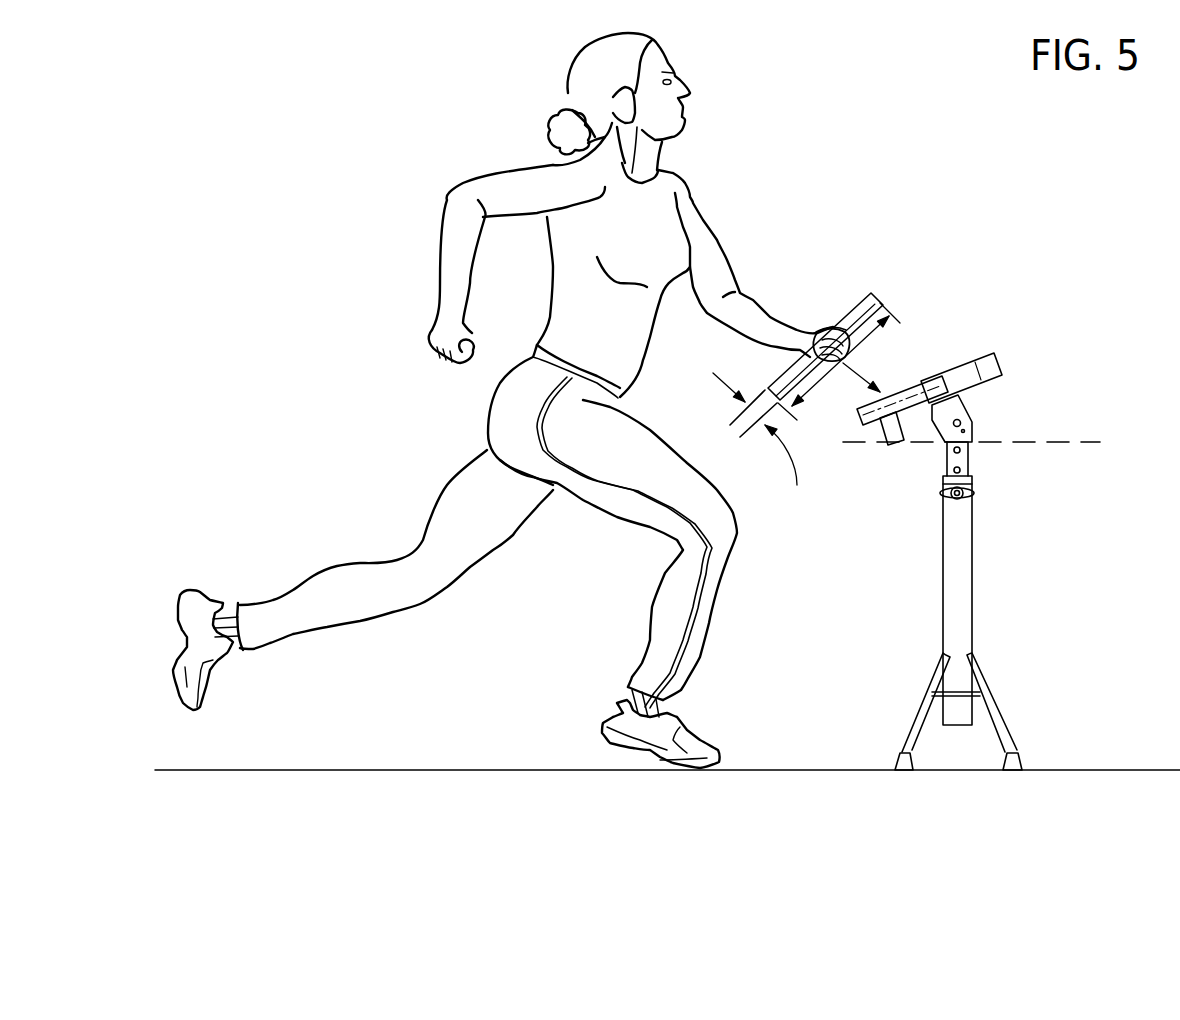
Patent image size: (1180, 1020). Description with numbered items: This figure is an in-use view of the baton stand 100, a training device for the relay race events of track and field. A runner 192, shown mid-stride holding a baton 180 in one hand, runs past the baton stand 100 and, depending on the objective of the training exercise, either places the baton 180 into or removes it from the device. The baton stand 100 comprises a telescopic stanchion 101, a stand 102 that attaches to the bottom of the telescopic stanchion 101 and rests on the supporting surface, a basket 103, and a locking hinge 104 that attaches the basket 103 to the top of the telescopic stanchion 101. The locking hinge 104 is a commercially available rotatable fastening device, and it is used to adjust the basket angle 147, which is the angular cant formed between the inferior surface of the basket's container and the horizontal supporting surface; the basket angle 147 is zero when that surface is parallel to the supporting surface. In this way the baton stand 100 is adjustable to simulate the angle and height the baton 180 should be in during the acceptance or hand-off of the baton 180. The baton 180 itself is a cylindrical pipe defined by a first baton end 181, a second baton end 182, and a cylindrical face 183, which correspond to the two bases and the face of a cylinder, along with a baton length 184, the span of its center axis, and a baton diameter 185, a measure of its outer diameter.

The baton stand 100 is at (1020, 421).
The telescopic stanchion 101 is at (972, 590).
The stand 102 is at (997, 707).
The basket 103 is at (1000, 357).
The locking hinge 104 is at (963, 393).
The basket angle 147 is at (917, 443).
The baton 180 is at (848, 308).
The first baton end 181 is at (872, 294).
The second baton end 182 is at (717, 370).
The cylindrical face 183 is at (845, 310).
The baton length 184 is at (862, 347).
The baton diameter 185 is at (795, 469).
The runner 192 is at (693, 203).